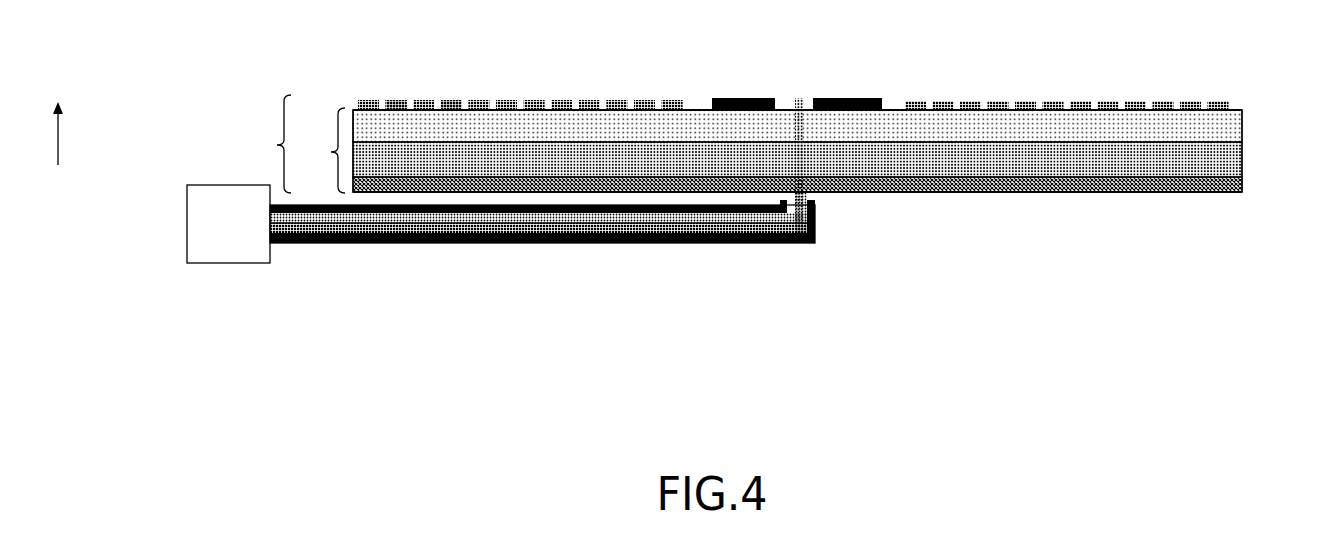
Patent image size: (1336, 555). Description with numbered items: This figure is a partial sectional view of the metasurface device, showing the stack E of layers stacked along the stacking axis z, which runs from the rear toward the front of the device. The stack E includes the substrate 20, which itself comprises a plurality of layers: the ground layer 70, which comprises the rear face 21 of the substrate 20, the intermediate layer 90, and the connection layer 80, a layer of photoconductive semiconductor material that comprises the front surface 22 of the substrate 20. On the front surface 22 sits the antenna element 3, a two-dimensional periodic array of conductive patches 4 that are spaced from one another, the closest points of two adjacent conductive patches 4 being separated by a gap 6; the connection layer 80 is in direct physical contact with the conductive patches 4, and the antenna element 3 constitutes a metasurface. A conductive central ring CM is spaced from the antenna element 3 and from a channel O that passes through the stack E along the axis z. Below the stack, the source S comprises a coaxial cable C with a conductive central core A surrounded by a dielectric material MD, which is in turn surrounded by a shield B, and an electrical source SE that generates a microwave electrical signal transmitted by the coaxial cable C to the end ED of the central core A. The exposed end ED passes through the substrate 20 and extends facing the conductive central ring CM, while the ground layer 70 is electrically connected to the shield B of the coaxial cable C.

The antenna element 3 is at (341, 108).
The conductive patches 4 is at (372, 100).
The front surface 22 is at (412, 100).
The gap 6 is at (467, 100).
The conductive central ring CM is at (738, 98).
The end of the central core ED is at (799, 98).
The channel O is at (805, 98).
The connection layer 80 is at (1242, 126).
The intermediate layer 90 is at (1242, 160).
The ground layer 70 is at (1242, 185).
The rear face 21 is at (1040, 199).
The substrate 20 is at (766, 150).
The stack E is at (268, 144).
The electrical source SE is at (187, 235).
The source S is at (435, 282).
The coaxial cable C is at (360, 255).
The shield B is at (500, 243).
The dielectric material MD is at (573, 230).
The conductive central core A is at (652, 223).
The stacking axis z is at (46, 133).